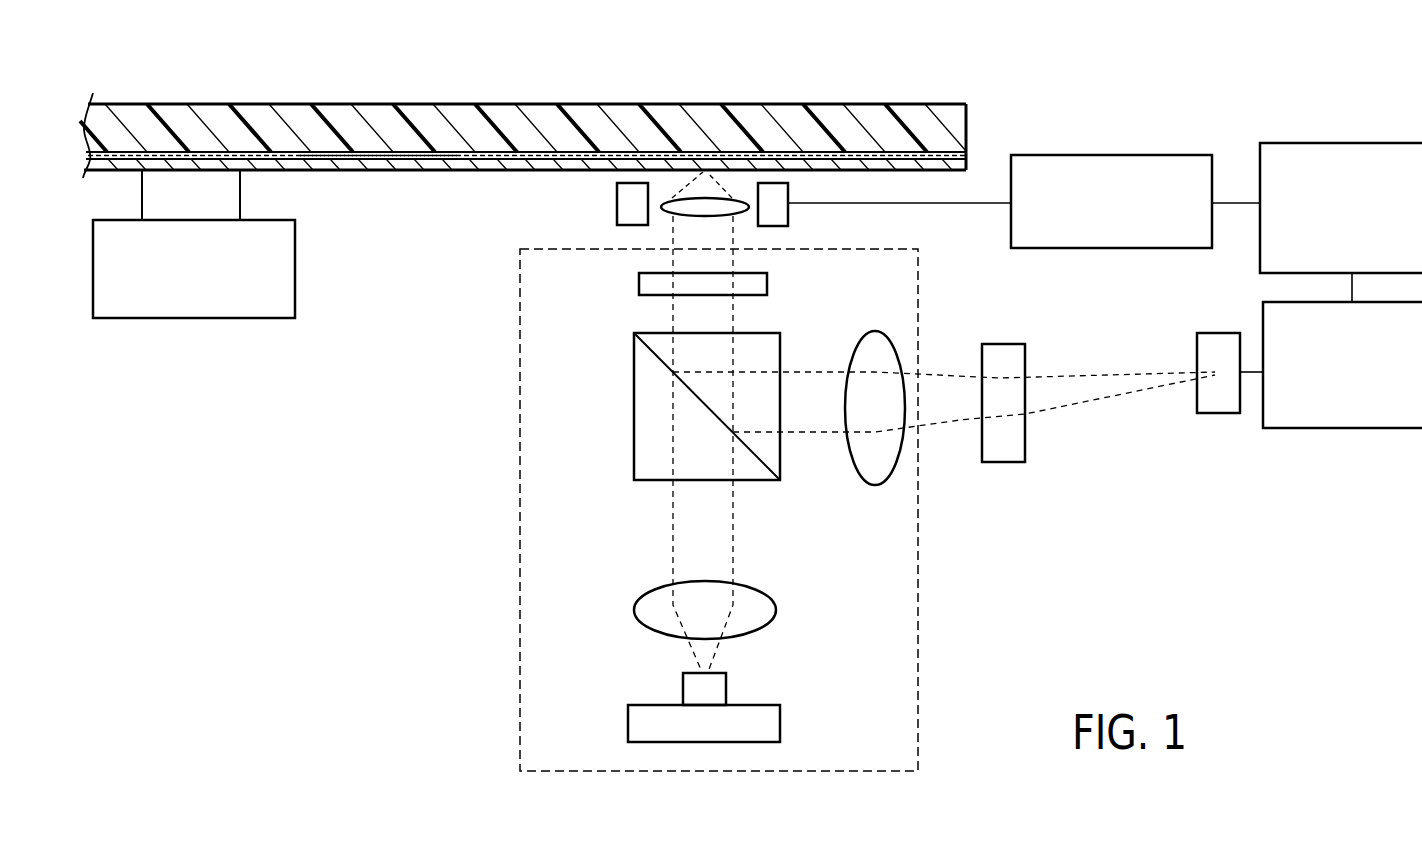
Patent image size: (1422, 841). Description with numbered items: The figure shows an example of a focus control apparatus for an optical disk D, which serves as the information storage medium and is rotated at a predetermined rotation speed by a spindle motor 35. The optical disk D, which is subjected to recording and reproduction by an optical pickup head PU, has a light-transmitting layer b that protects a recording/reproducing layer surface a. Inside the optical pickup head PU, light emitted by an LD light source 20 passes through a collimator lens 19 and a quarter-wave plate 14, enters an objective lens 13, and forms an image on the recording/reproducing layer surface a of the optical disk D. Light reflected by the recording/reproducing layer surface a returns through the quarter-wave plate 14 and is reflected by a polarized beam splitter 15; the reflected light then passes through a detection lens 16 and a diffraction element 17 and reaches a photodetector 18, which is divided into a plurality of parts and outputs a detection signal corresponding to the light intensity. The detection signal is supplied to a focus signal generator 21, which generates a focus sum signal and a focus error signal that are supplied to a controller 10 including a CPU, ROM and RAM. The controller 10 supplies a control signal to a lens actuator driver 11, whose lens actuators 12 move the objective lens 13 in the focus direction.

The optical disk D is at (551, 104).
The recording/reproducing layer surface a is at (382, 171).
The light-transmitting layer b is at (455, 171).
The spindle motor 35 is at (266, 318).
The lens actuators 12 is at (617, 207).
The objective lens 13 is at (742, 214).
The λ/4 wave plate 14 is at (639, 284).
The polarized beam splitter 15 is at (634, 410).
The detection lens 16 is at (866, 337).
The diffraction element 17 is at (1001, 344).
The photodetector 18 is at (1222, 333).
The lens actuator driver 11 is at (1104, 155).
The controller 10 is at (1367, 143).
The focus signal generator 21 is at (1352, 428).
The optical pickup head PU is at (520, 522).
The collimator lens 19 is at (640, 598).
The LD light source 20 is at (645, 705).